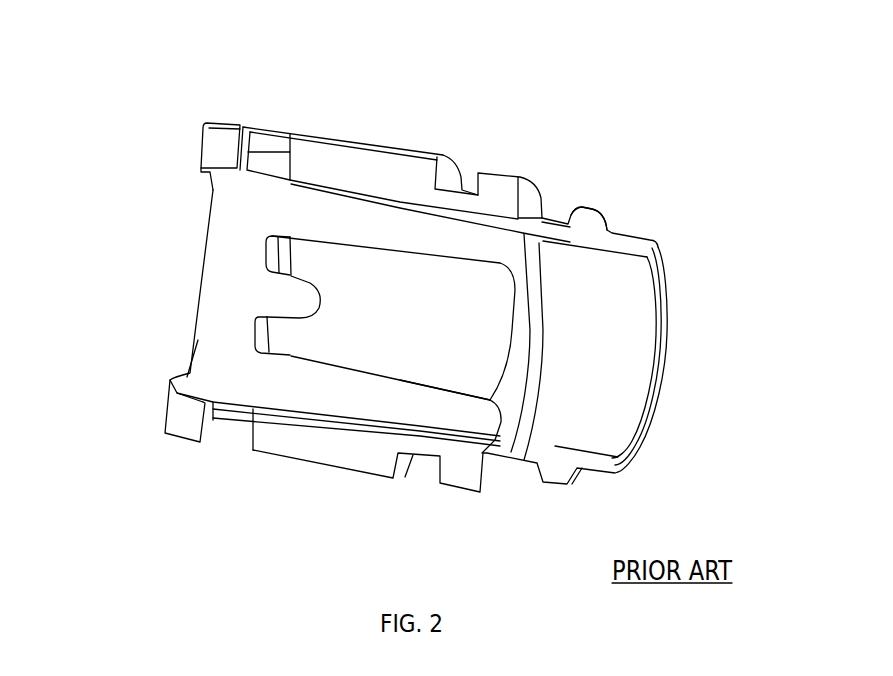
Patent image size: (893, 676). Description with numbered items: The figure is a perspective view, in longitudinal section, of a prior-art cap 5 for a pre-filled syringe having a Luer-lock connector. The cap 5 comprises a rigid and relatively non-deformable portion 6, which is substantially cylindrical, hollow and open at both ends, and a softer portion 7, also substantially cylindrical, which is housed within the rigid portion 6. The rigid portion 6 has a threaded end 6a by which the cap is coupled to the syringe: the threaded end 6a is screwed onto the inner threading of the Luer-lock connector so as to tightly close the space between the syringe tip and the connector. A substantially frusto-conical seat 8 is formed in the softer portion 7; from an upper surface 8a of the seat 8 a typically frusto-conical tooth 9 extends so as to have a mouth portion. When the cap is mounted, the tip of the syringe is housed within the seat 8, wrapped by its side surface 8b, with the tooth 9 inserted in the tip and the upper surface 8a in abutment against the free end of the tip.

The cap 5 is at (483, 117).
The rigid portion 6 is at (281, 127).
The threaded end 6a is at (585, 222).
The softer portion 7 is at (199, 288).
The seat 8 is at (398, 348).
The upper surface 8a is at (264, 333).
The side surface 8b is at (427, 384).
The tooth 9 is at (288, 295).